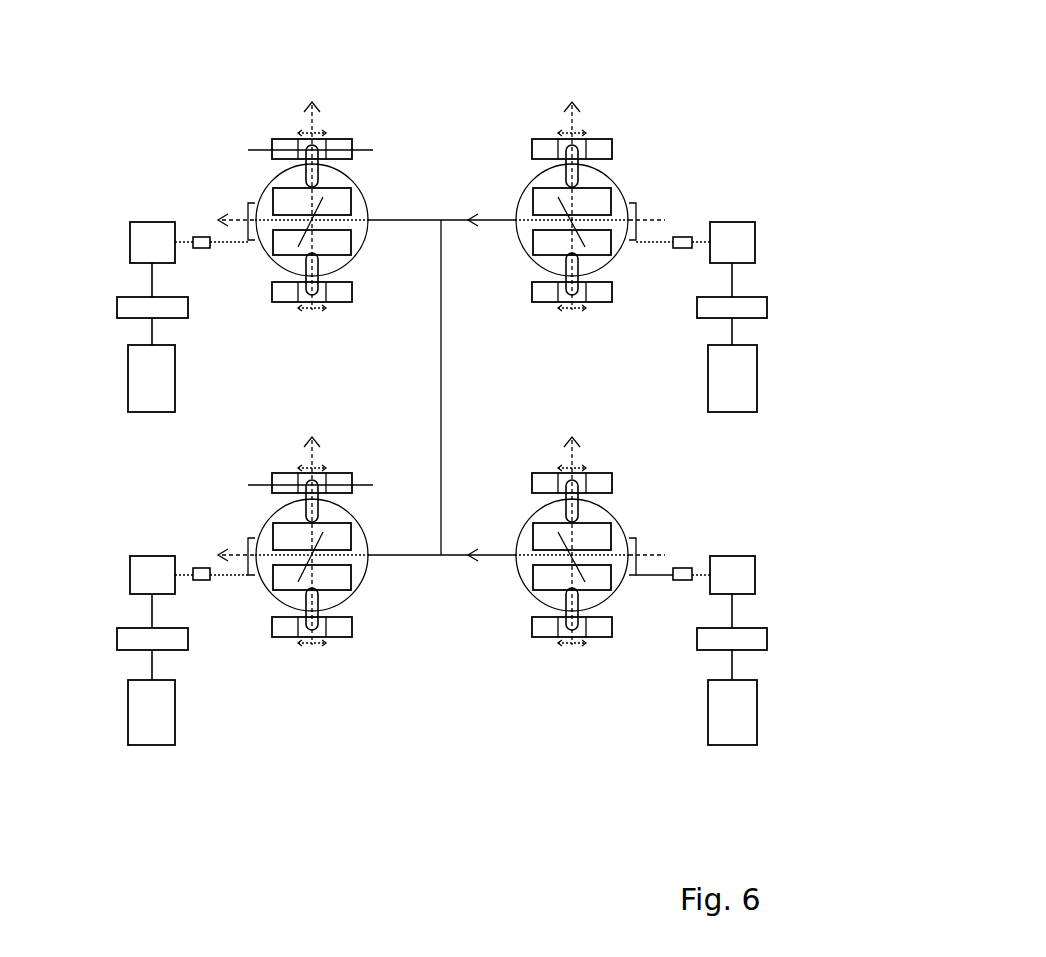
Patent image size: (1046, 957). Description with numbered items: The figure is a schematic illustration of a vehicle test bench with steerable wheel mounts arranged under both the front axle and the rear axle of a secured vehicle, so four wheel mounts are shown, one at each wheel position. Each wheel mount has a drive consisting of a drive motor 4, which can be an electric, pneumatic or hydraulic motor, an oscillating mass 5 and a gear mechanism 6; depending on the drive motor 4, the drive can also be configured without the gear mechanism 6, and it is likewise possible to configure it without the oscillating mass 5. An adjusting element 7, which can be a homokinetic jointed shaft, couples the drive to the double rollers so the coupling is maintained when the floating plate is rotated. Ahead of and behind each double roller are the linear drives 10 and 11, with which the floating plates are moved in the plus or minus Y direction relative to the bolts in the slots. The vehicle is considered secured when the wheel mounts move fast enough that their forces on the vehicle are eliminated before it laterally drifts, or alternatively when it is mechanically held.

The drive motor 4 is at (128, 393).
The oscillating mass 5 is at (130, 295).
The gear mechanism 6 is at (155, 220).
The adjusting element 7 is at (201, 235).
The linear drive 10 is at (291, 139).
The linear drive 11 is at (344, 282).